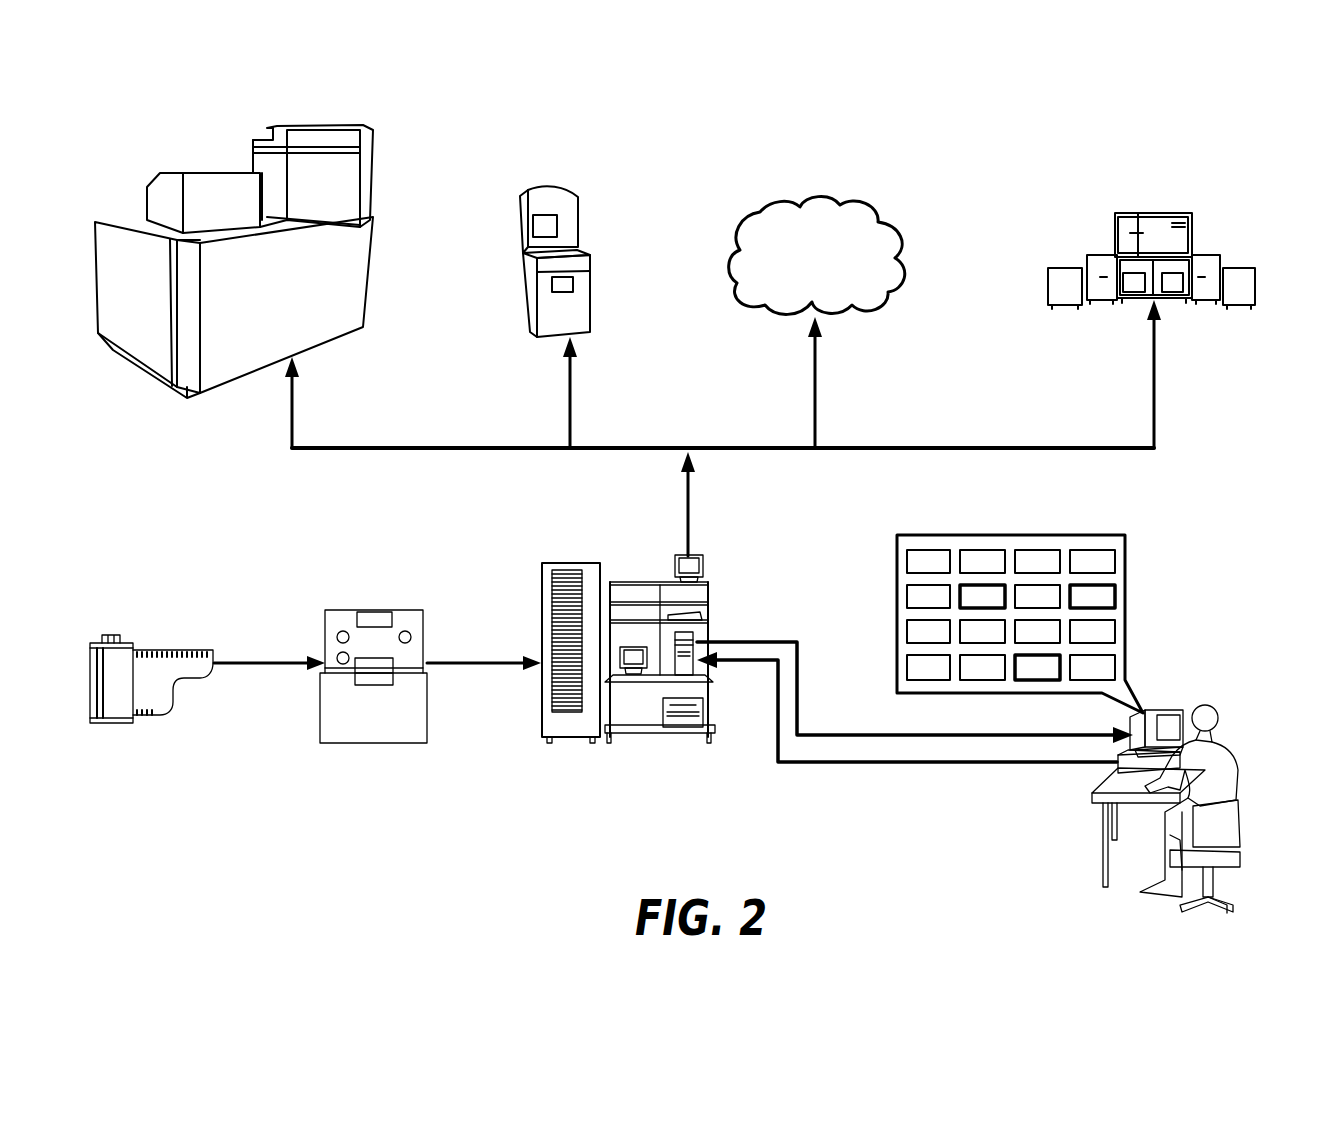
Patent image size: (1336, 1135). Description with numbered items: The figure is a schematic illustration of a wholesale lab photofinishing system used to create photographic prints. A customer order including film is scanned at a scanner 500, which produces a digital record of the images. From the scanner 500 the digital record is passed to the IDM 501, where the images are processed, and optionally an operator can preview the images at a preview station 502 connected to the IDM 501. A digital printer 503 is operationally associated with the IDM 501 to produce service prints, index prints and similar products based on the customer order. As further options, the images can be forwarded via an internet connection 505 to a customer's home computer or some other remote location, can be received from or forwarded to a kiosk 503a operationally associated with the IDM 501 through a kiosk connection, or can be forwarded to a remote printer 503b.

The scanner 500 is at (383, 609).
The IDM 501 is at (647, 734).
The preview station 502 is at (1170, 707).
The digital printer 503 is at (1127, 212).
The kiosk 503a is at (537, 183).
The remote printer 503b is at (297, 124).
The internet connection 505 is at (810, 203).